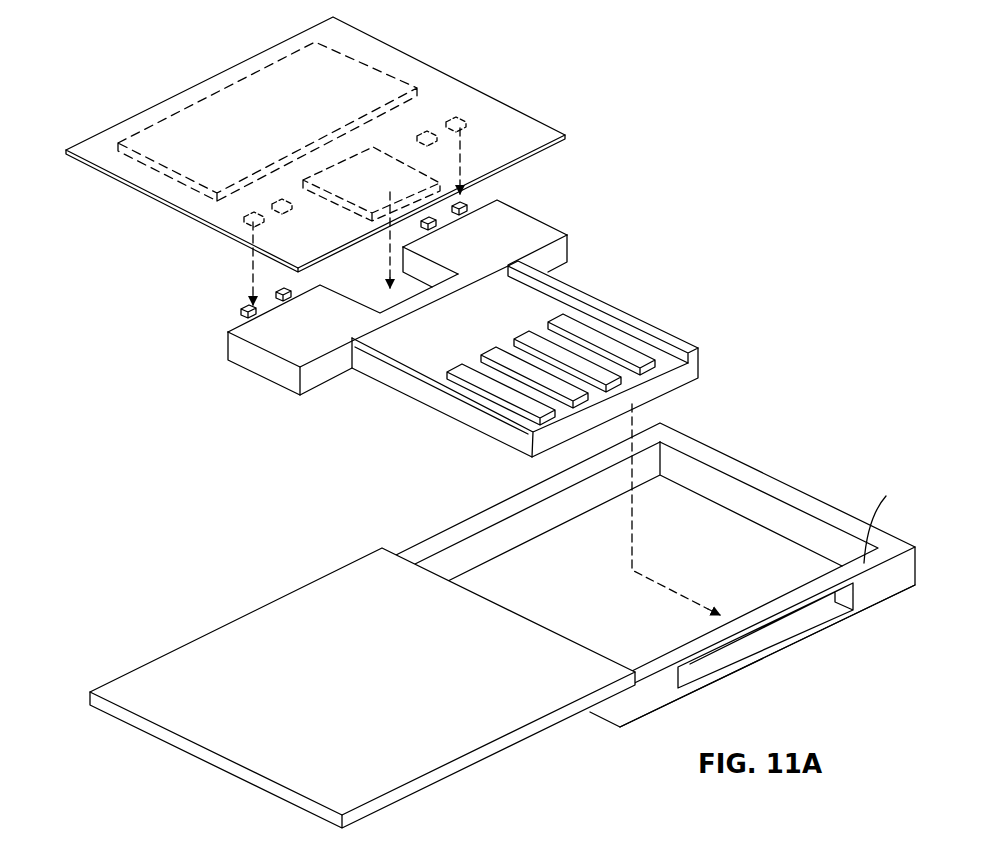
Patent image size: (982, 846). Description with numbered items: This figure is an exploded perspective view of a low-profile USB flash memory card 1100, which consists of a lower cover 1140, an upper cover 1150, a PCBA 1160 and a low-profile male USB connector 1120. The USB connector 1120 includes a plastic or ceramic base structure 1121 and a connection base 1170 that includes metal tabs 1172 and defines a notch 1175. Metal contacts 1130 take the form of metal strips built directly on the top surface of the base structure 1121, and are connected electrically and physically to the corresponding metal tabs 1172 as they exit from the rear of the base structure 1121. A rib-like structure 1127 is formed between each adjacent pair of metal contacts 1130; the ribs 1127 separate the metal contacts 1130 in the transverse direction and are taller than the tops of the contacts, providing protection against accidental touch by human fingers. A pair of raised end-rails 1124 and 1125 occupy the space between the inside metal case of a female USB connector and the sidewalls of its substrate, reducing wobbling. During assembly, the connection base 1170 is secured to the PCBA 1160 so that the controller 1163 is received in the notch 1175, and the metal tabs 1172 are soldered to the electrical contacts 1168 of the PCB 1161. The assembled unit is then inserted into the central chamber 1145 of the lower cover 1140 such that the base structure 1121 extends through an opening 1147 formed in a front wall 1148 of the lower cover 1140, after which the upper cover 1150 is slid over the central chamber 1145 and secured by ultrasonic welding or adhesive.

The low-profile USB flash memory card 1100 is at (761, 112).
The low-profile male USB connector 1120 is at (657, 168).
The base structure 1121 is at (468, 331).
The raised end-rail 1124 is at (413, 371).
The raised end-rail 1125 is at (593, 305).
The rib-like structure 1127 is at (519, 378).
The metal contacts 1130 is at (498, 392).
The lower cover 1140 is at (657, 565).
The central chamber 1145 is at (698, 566).
The opening 1147 is at (819, 611).
The front wall 1148 is at (670, 690).
The upper cover 1150 is at (348, 575).
The PCBA 1160 is at (172, 61).
The PCB 1161 is at (367, 53).
The controller 1163 is at (412, 165).
The electrical contacts 1168 is at (424, 131).
The connection base 1170 is at (525, 229).
The metal tabs 1172 is at (437, 223).
The notch 1175 is at (372, 289).